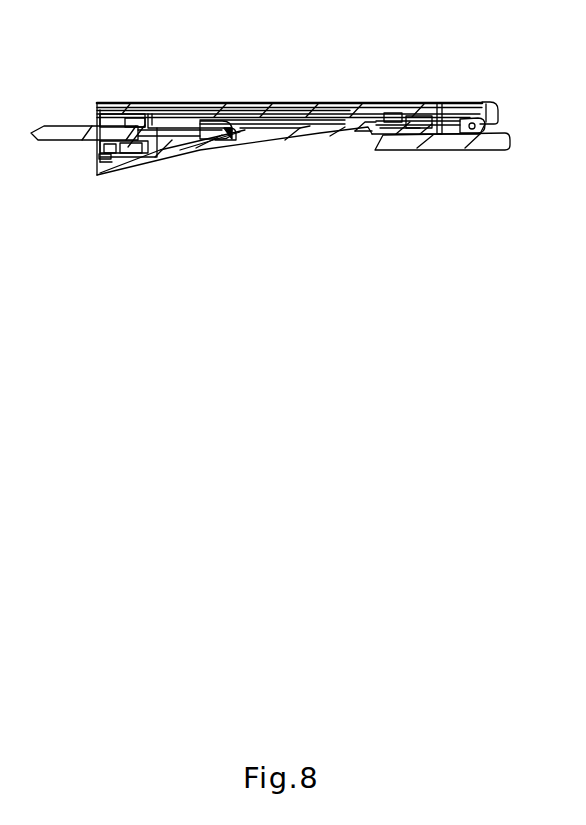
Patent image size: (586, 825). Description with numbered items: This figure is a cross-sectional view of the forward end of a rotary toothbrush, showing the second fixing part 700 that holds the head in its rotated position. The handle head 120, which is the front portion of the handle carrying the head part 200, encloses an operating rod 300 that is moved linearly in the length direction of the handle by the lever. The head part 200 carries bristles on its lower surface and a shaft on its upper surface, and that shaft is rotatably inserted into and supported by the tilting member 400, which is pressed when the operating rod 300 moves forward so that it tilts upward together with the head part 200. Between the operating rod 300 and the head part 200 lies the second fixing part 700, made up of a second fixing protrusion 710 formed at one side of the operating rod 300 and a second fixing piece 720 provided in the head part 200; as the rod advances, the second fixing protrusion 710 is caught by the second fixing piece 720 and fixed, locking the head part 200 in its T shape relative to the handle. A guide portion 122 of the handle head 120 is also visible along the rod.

The handle head 120 is at (258, 132).
The guide portion of body 122 is at (220, 102).
The head part 200 is at (398, 143).
The operating rod 300 is at (263, 105).
The tilting member 400 is at (472, 123).
The second fixing part 700 is at (143, 238).
The second fixing protrusion 710 is at (162, 120).
The second fixing piece 720 is at (218, 135).